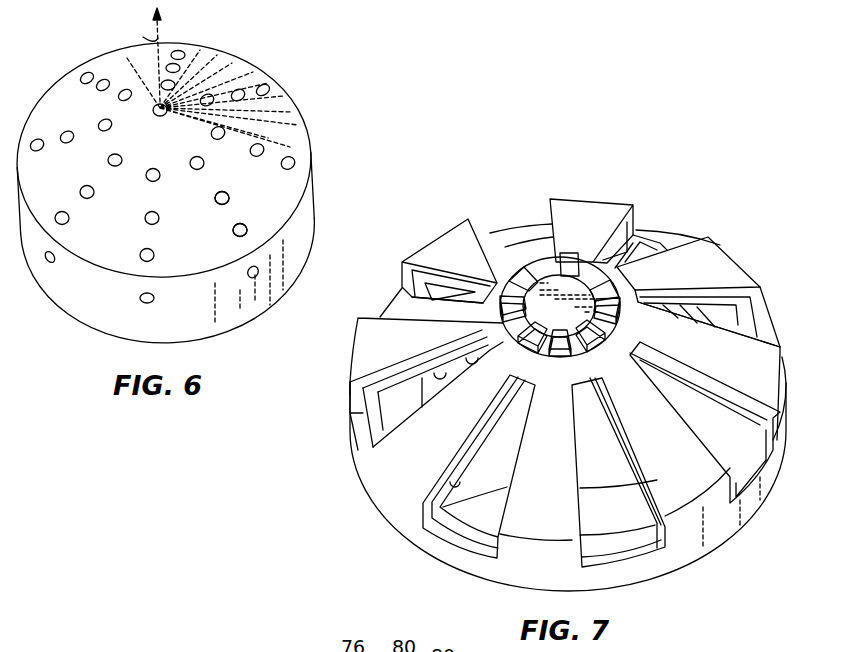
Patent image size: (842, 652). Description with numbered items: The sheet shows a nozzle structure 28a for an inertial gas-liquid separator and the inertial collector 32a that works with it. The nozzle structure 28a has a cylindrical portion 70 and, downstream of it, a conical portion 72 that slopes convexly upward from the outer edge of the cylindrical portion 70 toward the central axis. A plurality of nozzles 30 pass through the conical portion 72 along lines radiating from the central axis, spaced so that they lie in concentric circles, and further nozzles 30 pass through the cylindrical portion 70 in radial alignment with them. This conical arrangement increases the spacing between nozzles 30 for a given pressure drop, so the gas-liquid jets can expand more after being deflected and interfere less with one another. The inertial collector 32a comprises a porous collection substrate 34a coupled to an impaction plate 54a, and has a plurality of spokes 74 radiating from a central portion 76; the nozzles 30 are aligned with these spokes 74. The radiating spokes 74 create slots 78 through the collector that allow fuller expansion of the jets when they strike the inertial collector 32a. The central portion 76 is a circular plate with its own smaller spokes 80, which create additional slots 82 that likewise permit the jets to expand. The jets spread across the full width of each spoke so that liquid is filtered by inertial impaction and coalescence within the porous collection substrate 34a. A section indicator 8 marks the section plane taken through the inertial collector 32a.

In FIG. 6, the nozzle structure 28a is at (308, 97).
In FIG. 6, the nozzles 30 is at (230, 196).
In FIG. 6, the cylindrical portion 70 is at (90, 305).
In FIG. 6, the conical portion 72 is at (73, 100).
In FIG. 7, the inertial collector 32a is at (734, 243).
In FIG. 7, the porous collection substrate 34a is at (755, 305).
In FIG. 7, the impaction plate 54a is at (732, 275).
In FIG. 7, the spokes 74 is at (462, 240).
In FIG. 7, the central portion 76 is at (580, 283).
In FIG. 7, the slots 78 is at (513, 220).
In FIG. 7, the spokes 80 is at (556, 358).
In FIG. 7, the slots 82 is at (490, 318).
In FIG. 7, the section line 8- 8 is at (343, 354).